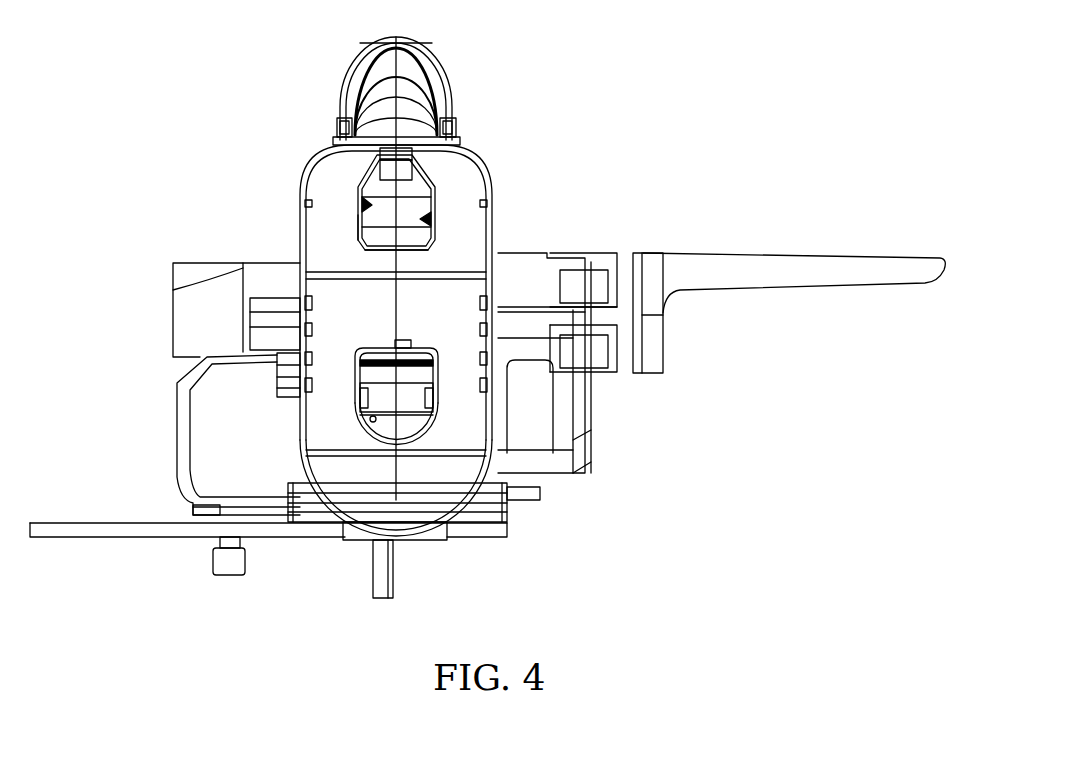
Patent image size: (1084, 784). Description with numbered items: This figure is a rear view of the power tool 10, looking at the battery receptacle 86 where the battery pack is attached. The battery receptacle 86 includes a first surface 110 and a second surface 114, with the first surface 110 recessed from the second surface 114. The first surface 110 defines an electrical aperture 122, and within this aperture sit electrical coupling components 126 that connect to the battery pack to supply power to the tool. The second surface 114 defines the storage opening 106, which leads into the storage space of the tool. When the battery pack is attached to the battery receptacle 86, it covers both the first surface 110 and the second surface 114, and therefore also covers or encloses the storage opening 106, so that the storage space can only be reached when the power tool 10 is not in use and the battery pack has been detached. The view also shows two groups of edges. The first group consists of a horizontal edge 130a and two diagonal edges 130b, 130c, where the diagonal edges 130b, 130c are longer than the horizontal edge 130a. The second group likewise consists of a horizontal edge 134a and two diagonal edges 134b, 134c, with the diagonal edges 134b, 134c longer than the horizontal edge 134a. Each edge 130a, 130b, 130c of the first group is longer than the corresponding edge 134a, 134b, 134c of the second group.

The power tool 10 is at (782, 100).
The battery receptacle 86 is at (322, 318).
The storage opening 106 is at (362, 204).
The first surface 110 is at (467, 427).
The second surface 114 is at (318, 262).
The electrical aperture 122 is at (368, 373).
The electrical coupling components 126 is at (440, 390).
The horizontal edge 130a is at (410, 254).
The diagonal edge 130b is at (360, 232).
The diagonal edge 130c is at (428, 220).
The horizontal edge 134a is at (427, 176).
The diagonal edge 134b is at (362, 182).
The diagonal edge 134c is at (421, 172).